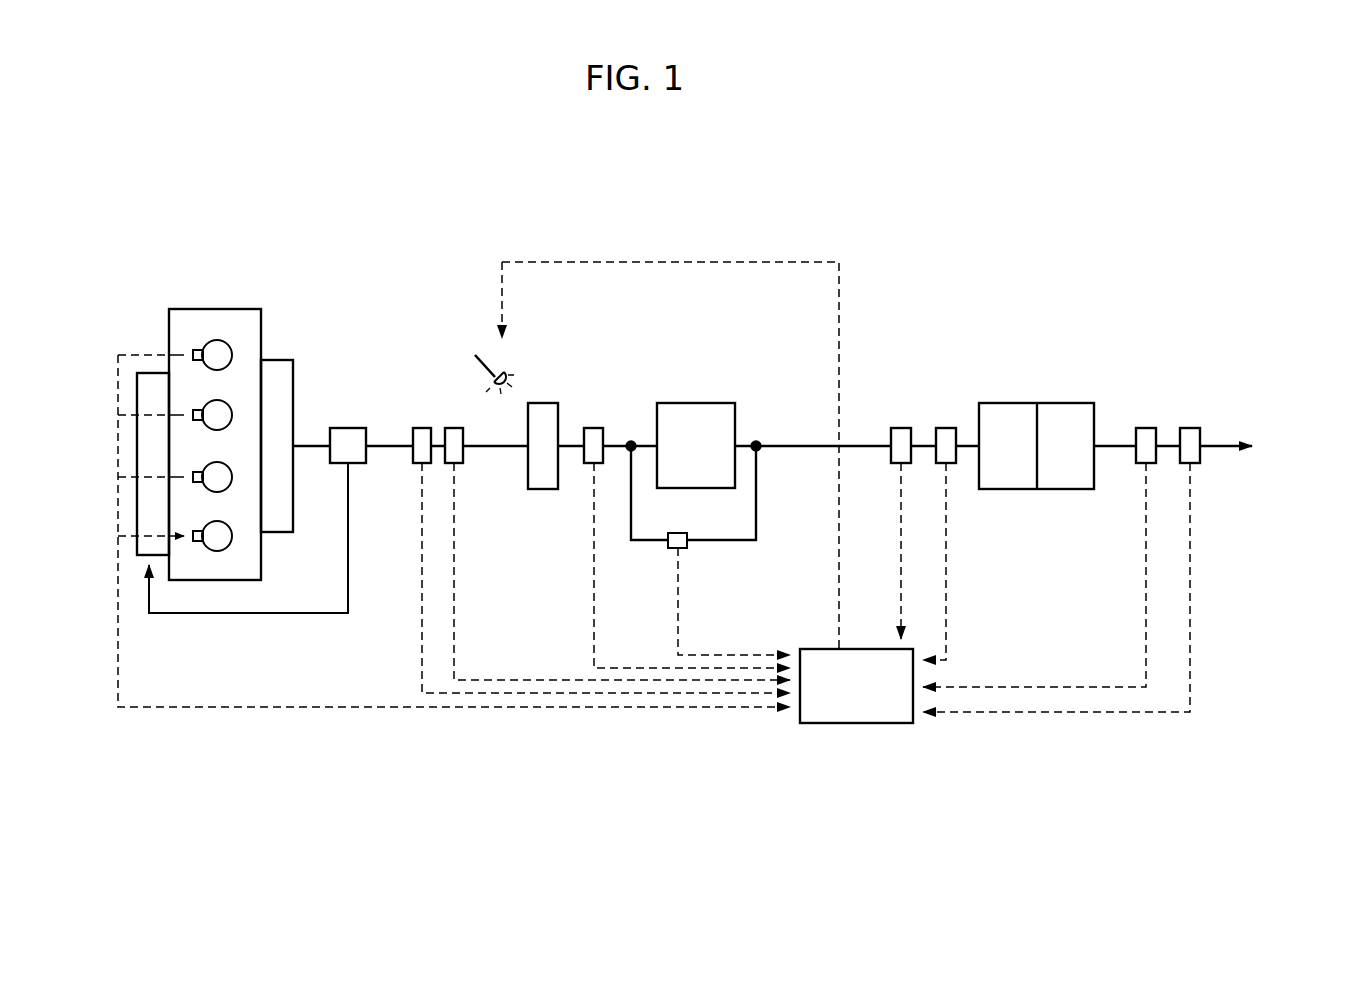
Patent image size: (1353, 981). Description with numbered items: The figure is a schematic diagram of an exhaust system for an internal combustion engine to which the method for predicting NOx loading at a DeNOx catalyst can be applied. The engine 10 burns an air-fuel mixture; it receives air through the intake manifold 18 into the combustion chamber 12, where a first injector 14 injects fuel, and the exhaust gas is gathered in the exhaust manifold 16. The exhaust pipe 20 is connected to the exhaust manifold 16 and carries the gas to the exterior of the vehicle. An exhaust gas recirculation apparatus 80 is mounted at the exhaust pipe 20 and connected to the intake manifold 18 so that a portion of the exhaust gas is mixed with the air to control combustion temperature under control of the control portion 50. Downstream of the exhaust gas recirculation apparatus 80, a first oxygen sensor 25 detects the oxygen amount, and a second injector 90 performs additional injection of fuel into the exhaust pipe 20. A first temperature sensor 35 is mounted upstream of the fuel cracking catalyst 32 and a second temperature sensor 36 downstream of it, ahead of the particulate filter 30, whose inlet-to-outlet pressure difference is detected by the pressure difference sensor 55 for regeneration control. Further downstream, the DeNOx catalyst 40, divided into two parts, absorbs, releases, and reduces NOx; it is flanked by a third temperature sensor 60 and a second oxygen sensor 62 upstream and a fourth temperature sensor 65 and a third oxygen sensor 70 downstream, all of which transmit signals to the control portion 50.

The engine 10 is at (274, 280).
The combustion chamber 12 is at (222, 340).
The first injector 14 is at (192, 349).
The exhaust manifold 16 is at (284, 367).
The intake manifold 18 is at (137, 372).
The exhaust pipe 20 is at (382, 443).
The first oxygen sensor 25 is at (422, 427).
The particulate filter 30 is at (716, 362).
The fuel cracking catalyst 32 is at (545, 402).
The first temperature sensor 35 is at (454, 427).
The second temperature sensor 36 is at (596, 427).
The DeNOx catalyst 40 is at (1057, 410).
The control portion 50 is at (875, 719).
The pressure difference sensor 55 is at (672, 543).
The third temperature sensor 60 is at (900, 427).
The second oxygen sensor 62 is at (946, 427).
The fourth temperature sensor 65 is at (1148, 427).
The third oxygen sensor 70 is at (1192, 427).
The exhaust gas recirculation apparatus 80 is at (345, 427).
The second injector 90 is at (477, 355).